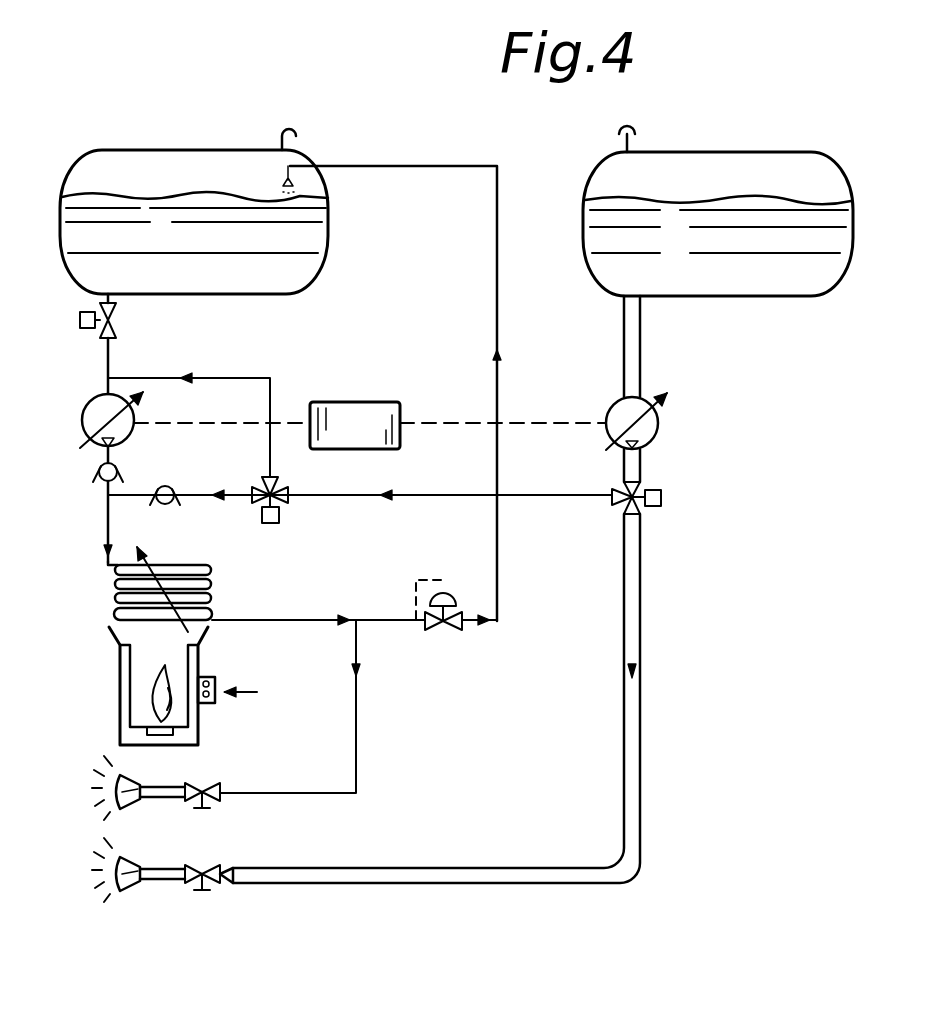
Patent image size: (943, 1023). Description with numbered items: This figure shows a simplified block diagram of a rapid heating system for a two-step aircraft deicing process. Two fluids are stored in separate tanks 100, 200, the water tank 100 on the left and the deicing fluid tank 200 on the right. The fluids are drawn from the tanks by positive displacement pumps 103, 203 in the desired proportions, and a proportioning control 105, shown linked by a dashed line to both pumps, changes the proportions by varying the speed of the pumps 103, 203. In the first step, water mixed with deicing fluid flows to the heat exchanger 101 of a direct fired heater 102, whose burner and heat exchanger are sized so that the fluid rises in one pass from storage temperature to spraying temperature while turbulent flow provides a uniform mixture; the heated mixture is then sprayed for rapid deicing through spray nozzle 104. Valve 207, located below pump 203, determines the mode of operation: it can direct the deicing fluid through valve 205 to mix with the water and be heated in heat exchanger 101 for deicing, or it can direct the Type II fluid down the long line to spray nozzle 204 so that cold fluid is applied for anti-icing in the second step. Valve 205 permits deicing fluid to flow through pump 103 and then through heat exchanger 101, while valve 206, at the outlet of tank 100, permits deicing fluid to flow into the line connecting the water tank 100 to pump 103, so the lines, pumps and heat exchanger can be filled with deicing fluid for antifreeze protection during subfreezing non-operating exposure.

The tank 100 is at (186, 150).
The tank 200 is at (790, 152).
The valve 206 is at (80, 318).
The pump 103 is at (82, 418).
The proportioning control 105 is at (398, 403).
The valve 205 is at (288, 497).
The pump 203 is at (658, 428).
The valve 207 is at (662, 498).
The heat exchanger 101 is at (215, 600).
The direct fired heater 102 is at (120, 705).
The spray nozzle 104 is at (112, 798).
The spray nozzle 204 is at (114, 880).